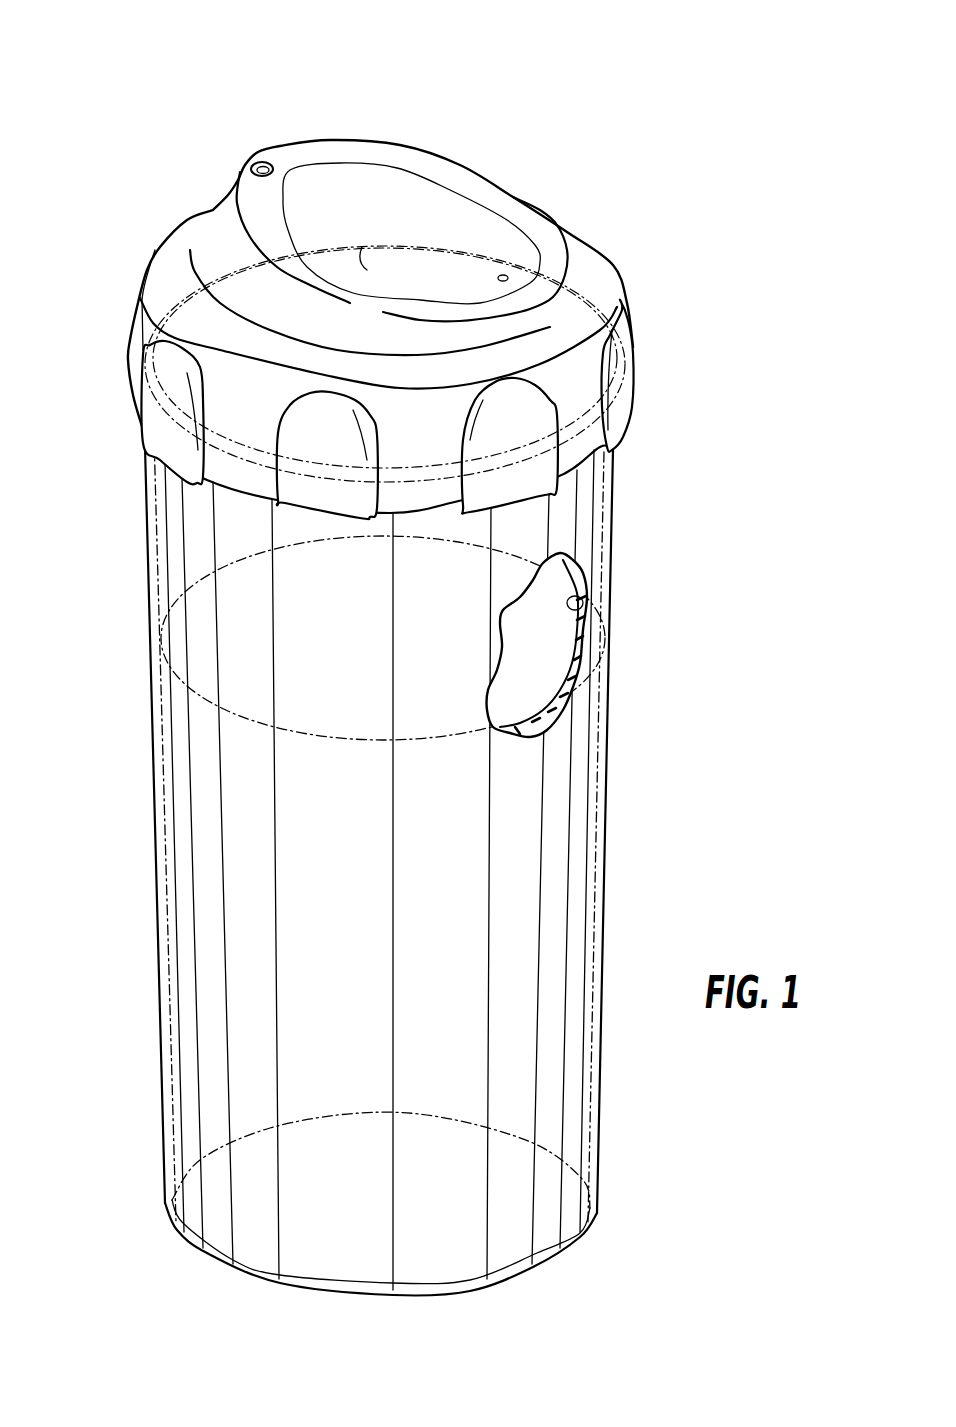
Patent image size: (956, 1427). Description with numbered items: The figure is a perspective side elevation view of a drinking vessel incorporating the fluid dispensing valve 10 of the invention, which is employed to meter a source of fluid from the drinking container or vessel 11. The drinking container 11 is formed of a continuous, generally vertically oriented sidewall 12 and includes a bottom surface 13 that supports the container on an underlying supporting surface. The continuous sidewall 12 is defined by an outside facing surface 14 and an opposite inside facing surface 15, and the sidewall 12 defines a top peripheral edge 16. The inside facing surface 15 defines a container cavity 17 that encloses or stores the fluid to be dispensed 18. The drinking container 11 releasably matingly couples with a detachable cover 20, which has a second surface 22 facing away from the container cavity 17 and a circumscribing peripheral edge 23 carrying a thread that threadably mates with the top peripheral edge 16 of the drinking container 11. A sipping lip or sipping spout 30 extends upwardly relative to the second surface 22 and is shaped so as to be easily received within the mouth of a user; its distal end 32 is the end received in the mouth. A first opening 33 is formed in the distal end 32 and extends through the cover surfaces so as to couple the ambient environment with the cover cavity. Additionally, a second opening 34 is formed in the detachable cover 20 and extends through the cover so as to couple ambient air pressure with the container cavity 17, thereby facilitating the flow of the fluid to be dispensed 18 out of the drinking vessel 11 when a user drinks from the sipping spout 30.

The fluid dispensing valve 10 is at (430, 155).
The drinking container or vessel 11 is at (140, 1040).
The sidewall 12 is at (193, 873).
The bottom surface 13 is at (545, 1255).
The outside facing surface 14 is at (563, 778).
The inside facing surface 15 is at (574, 598).
The top peripheral edge 16 is at (578, 296).
The container cavity 17 is at (543, 673).
The fluid to be dispensed 18 is at (200, 635).
The detachable cover 20 is at (495, 98).
The second surface 22 is at (290, 310).
The circumscribing peripheral edge 23 is at (587, 462).
The sipping spout 30 is at (220, 237).
The distal end 32 is at (305, 150).
The first opening 33 is at (255, 158).
The second opening 34 is at (502, 272).